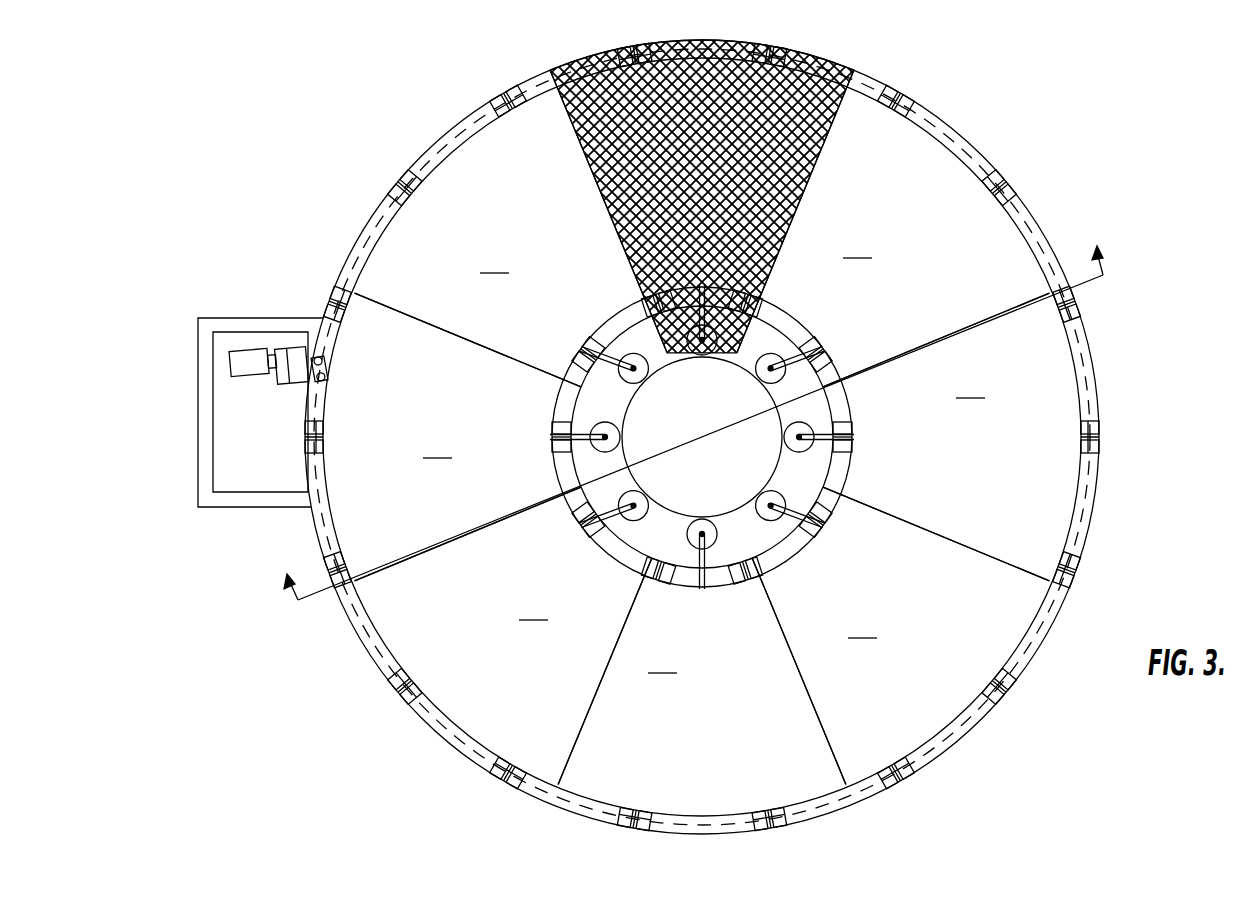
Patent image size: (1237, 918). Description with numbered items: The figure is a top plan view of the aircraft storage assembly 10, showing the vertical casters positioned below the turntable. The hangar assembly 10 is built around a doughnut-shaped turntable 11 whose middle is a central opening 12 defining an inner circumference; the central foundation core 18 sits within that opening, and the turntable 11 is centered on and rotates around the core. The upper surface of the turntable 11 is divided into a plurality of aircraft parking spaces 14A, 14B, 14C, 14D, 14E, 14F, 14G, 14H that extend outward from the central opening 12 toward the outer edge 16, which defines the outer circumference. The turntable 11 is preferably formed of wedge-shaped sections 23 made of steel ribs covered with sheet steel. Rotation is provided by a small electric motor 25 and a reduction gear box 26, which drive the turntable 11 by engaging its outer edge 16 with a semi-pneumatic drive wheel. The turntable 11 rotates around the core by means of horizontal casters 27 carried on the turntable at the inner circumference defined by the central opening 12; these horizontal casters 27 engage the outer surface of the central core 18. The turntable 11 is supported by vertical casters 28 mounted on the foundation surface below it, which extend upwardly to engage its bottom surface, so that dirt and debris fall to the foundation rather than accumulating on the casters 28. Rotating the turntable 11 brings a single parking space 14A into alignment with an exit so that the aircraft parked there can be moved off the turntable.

The aircraft storage assembly 10 is at (210, 100).
The turntable 11 is at (403, 263).
The central opening 12 is at (580, 383).
The aircraft parking space 14A is at (818, 62).
The aircraft parking space 14B is at (511, 228).
The aircraft parking space 14C is at (468, 437).
The aircraft parking space 14D is at (503, 635).
The aircraft parking space 14E is at (702, 671).
The aircraft parking space 14F is at (900, 635).
The aircraft parking space 14G is at (936, 437).
The aircraft parking space 14H is at (893, 228).
The outer edge 16 is at (317, 520).
The central foundation core 18 is at (733, 387).
The wedge-shaped section 23 is at (592, 58).
The electric motor 25 is at (248, 360).
The reduction gear box 26 is at (298, 363).
The horizontal casters 27 is at (630, 352).
The vertical casters 28 is at (1004, 168).